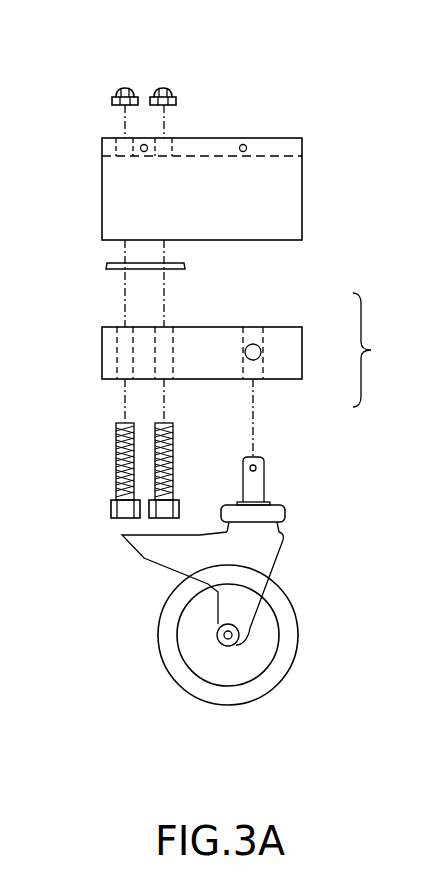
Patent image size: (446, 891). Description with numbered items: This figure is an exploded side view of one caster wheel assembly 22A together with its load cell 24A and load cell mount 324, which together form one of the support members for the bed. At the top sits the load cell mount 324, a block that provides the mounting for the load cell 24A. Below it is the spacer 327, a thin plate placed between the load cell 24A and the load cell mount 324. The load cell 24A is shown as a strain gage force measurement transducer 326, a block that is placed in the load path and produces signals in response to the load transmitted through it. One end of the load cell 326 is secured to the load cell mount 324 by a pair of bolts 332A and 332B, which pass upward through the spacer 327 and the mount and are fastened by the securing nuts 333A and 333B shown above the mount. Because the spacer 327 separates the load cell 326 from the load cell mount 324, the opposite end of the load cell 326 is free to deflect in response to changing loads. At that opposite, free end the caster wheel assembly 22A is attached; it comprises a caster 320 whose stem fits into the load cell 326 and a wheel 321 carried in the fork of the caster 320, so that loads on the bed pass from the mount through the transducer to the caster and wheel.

The securing nut 333A is at (162, 88).
The securing nut 333B is at (126, 88).
The load cell mount 324 is at (353, 89).
The spacer 327 is at (106, 266).
The strain gage force measurement transducer 326 is at (213, 336).
The load cell 24A is at (381, 350).
The bolt 332A is at (116, 492).
The bolt 332B is at (160, 518).
The caster 320 is at (167, 558).
The wheel 321 is at (177, 662).
The caster wheel assembly 22A is at (256, 580).